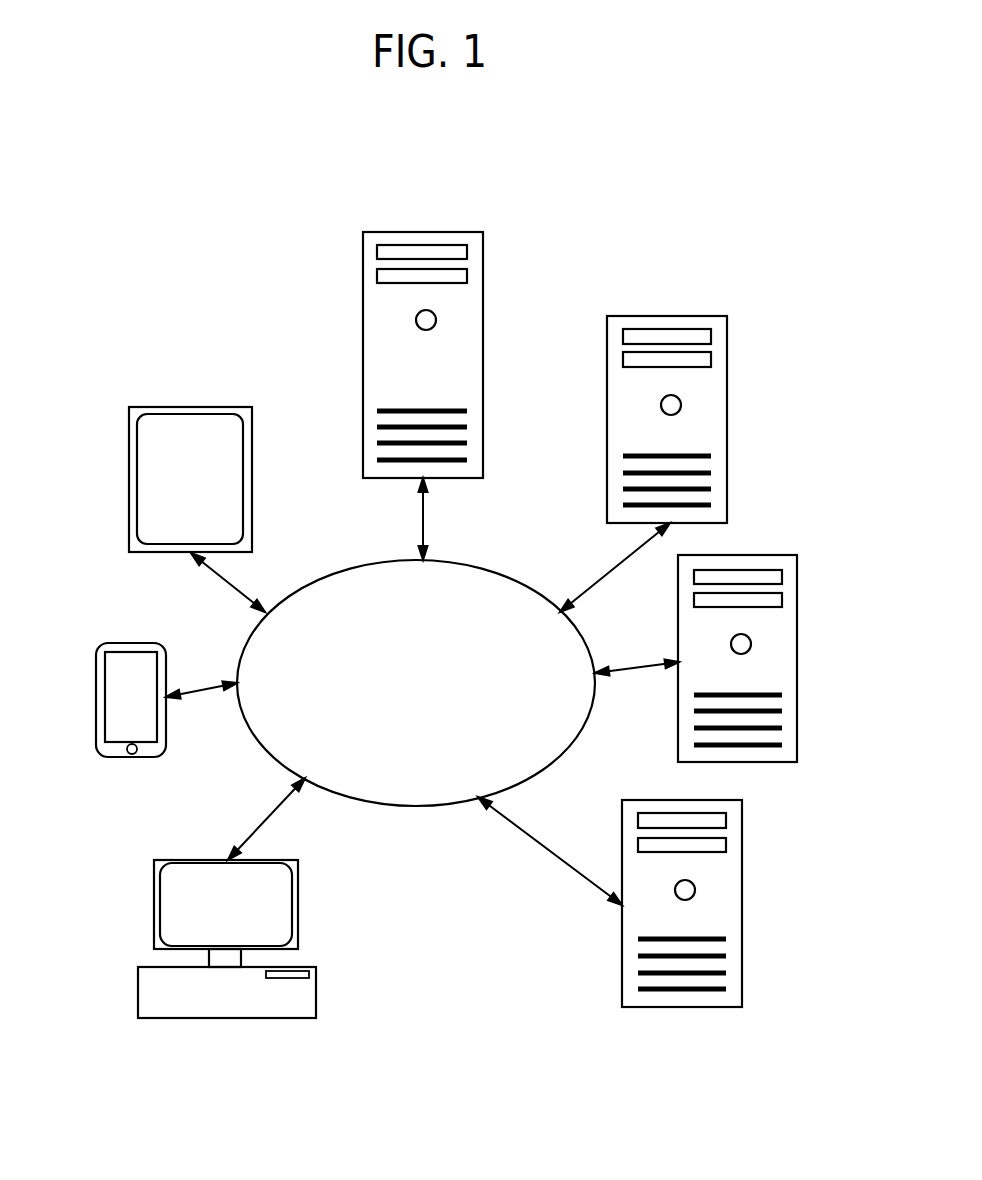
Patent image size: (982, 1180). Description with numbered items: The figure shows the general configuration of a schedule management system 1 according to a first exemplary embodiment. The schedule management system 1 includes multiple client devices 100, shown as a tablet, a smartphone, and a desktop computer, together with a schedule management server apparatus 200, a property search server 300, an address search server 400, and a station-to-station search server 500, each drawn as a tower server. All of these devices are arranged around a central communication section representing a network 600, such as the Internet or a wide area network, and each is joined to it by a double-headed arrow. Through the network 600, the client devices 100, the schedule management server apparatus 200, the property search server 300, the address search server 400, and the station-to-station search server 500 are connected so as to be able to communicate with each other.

The schedule management system 1 is at (156, 320).
The client device 100 is at (129, 470).
The schedule management server apparatus 200 is at (363, 318).
The property search server 300 is at (727, 351).
The address search server 400 is at (748, 555).
The station-to-station search server 500 is at (742, 822).
The network 600 is at (426, 806).